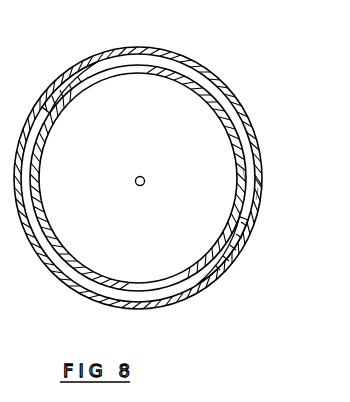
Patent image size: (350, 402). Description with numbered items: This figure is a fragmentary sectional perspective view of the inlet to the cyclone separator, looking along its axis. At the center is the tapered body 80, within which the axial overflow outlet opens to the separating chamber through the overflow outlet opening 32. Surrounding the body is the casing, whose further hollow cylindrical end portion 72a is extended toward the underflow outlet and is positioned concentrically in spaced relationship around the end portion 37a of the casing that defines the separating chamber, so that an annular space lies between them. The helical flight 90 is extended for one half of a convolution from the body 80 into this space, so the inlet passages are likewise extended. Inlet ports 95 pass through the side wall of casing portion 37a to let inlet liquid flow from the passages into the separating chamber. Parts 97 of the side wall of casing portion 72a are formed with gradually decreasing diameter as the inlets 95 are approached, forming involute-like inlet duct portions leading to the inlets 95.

The tapered body 80 is at (190, 138).
The helical flight 90 is at (196, 80).
The inlet ports 95 is at (94, 90).
The parts of the side wall of casing portion 72a 97 is at (58, 92).
The end portion of casing 37 37a is at (245, 176).
The hollow cylindrical end portion of casing 72 72a is at (258, 194).
The overflow outlet opening 32 is at (139, 186).